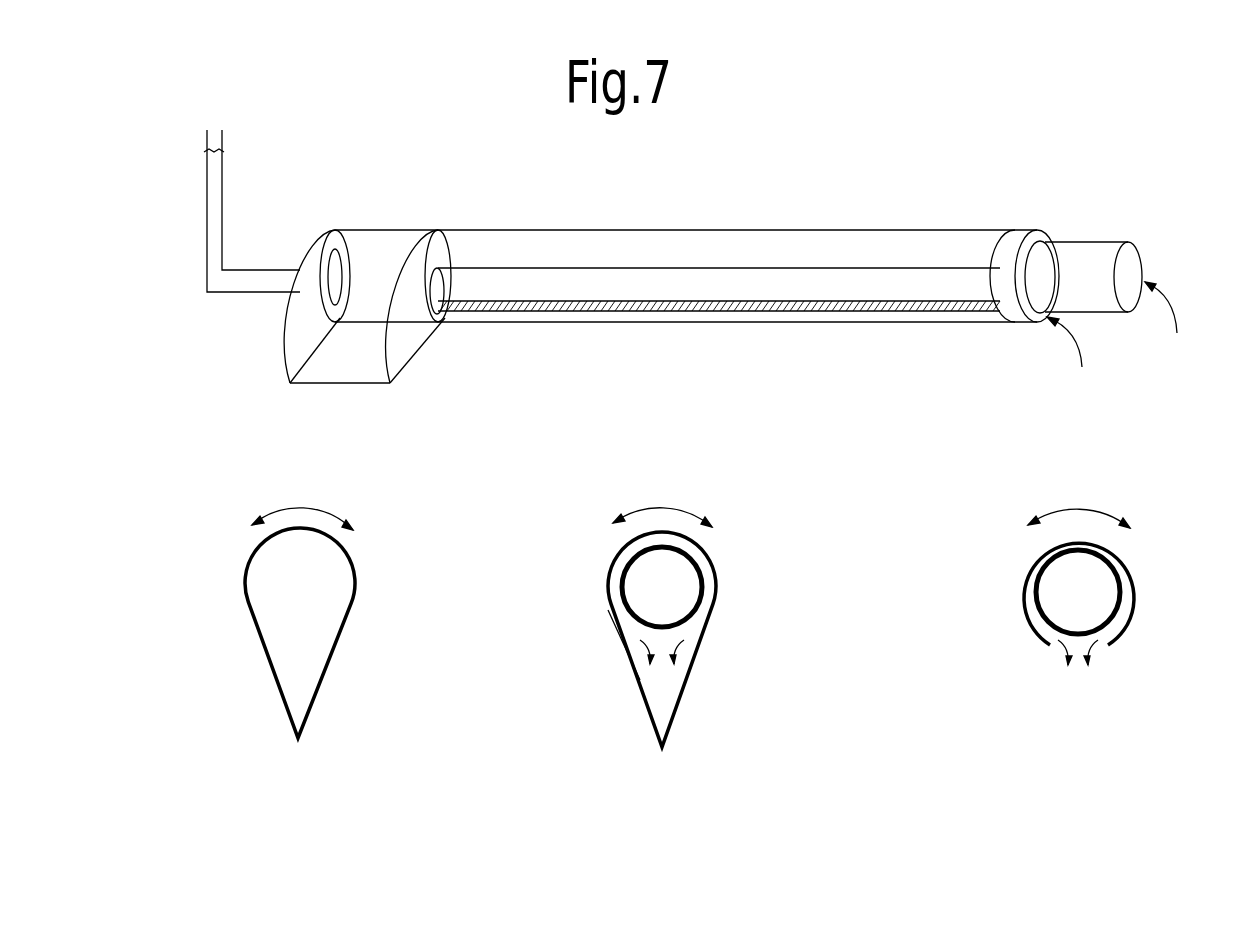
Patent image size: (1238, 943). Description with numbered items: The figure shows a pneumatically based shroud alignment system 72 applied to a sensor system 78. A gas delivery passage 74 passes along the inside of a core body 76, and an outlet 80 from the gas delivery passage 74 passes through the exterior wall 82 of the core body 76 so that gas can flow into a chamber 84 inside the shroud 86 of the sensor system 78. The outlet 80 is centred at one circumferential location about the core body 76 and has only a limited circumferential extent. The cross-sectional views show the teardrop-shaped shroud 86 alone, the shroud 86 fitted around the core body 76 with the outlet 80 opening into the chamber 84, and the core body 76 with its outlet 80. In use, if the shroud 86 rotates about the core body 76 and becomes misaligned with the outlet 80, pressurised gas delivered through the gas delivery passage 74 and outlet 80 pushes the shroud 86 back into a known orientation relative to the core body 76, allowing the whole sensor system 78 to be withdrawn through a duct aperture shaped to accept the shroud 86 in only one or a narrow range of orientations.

The shroud alignment system 72 is at (813, 173).
The gas delivery passage 74 is at (975, 296).
The core body 76 is at (1095, 292).
The sensor system 78 is at (517, 210).
The outlet 80 is at (665, 648).
The exterior wall 82 is at (1087, 272).
The chamber 84 is at (640, 678).
The shroud 86 is at (345, 363).